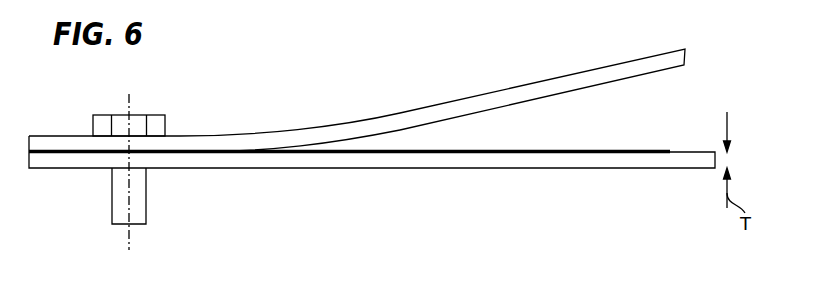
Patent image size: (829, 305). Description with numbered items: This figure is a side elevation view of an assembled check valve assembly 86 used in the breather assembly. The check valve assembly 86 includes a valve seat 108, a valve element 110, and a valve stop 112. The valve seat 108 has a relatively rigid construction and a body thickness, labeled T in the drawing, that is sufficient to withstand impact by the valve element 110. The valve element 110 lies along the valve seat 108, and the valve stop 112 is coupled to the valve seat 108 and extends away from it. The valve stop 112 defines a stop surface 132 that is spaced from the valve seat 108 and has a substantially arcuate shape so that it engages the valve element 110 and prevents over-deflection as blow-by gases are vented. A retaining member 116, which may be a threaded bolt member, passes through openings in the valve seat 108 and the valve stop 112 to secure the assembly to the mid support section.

The check valve assembly 86 is at (330, 86).
The valve seat 108 is at (522, 170).
The valve element 110 is at (618, 150).
The valve stop 112 is at (597, 72).
The retaining member 116 is at (121, 199).
The stop surface 132 is at (505, 108).